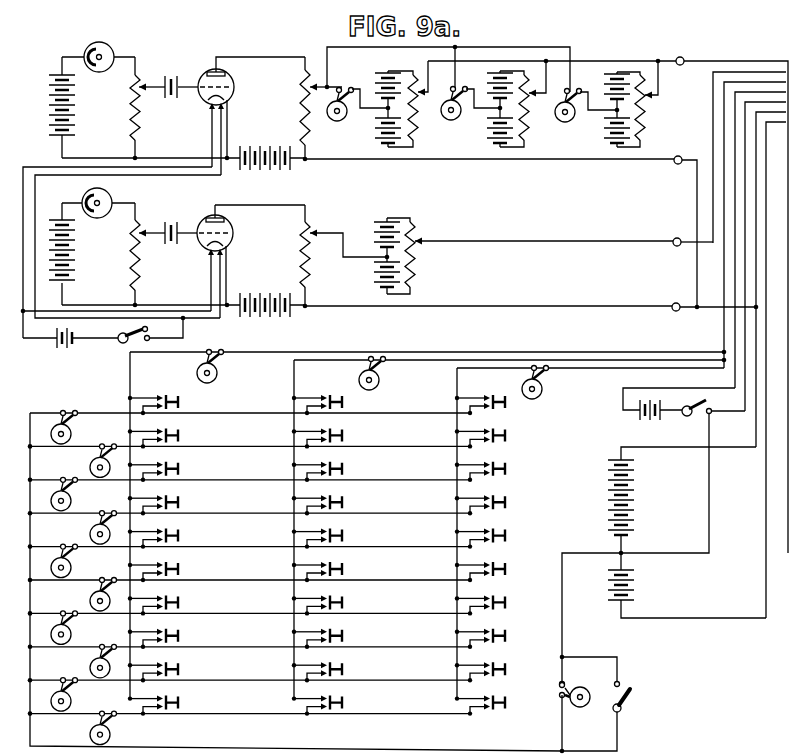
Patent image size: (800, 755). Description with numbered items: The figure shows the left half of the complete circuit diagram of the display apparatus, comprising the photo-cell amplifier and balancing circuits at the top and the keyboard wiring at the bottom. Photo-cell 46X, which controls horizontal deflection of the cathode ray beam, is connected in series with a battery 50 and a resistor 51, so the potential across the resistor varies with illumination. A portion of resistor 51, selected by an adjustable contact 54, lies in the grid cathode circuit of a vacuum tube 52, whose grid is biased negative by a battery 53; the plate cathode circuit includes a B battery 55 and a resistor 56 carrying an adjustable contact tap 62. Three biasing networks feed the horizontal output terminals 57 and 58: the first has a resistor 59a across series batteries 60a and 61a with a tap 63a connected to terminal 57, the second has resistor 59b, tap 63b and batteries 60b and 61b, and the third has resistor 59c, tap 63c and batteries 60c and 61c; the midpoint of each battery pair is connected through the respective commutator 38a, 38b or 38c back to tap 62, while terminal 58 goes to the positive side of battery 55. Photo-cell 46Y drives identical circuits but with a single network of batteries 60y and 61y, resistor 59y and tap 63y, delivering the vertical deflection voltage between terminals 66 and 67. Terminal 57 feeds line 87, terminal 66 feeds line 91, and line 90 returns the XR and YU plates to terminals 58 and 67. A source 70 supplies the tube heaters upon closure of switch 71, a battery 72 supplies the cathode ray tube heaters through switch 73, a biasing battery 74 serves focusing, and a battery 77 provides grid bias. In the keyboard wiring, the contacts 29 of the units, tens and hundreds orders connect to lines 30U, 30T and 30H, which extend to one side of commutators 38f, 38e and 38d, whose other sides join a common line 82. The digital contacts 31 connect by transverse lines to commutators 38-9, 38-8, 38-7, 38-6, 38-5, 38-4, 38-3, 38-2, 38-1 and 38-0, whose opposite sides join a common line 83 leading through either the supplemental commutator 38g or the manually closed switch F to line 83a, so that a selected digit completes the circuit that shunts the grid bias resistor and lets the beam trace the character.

The photo-cell 46X is at (112, 50).
The photo-cell 46Y is at (111, 197).
The battery 50 is at (76, 100).
The resistor 51 is at (138, 78).
The vacuum tube 52 is at (233, 80).
The battery 53 is at (175, 72).
The contact 54 is at (149, 92).
The B battery 55 is at (265, 147).
The resistor 56 is at (300, 105).
The terminal 57 is at (681, 57).
The terminal 58 is at (676, 166).
The resistor 59a is at (422, 64).
The resistor 59b is at (528, 68).
The resistor 59c is at (647, 82).
The resistor 59y is at (415, 222).
The battery 60a is at (374, 86).
The battery 60b is at (493, 88).
The battery 60c is at (607, 90).
The battery 60y is at (375, 237).
The battery 61a is at (375, 122).
The battery 61b is at (493, 125).
The battery 61c is at (608, 128).
The battery 61y is at (374, 270).
The contact tap 62 is at (326, 62).
The contact tap 63a is at (424, 98).
The contact tap 63b is at (540, 100).
The contact tap 63c is at (648, 95).
The contact tap 63y is at (424, 243).
The terminal 66 is at (674, 240).
The terminal 67 is at (673, 305).
The source 70 is at (66, 350).
The switch 71 is at (125, 347).
The battery 72 is at (644, 420).
The switch 73 is at (700, 413).
The biasing battery 74 is at (635, 490).
The battery 77 is at (632, 590).
The common line 82 is at (724, 336).
The common line 83 is at (30, 620).
The line 83a is at (733, 414).
The line 87 is at (745, 60).
The line 90 is at (757, 271).
The line 91 is at (713, 137).
The commutator 38a is at (333, 122).
The commutator 38b is at (449, 121).
The commutator 38c is at (563, 122).
The commutator 38d is at (215, 380).
The commutator 38e is at (377, 387).
The commutator 38f is at (540, 396).
The supplemental commutator 38g is at (583, 707).
The commutator 38-0 is at (90, 733).
The commutator 38-1 is at (71, 700).
The commutator 38-2 is at (90, 666).
The commutator 38-3 is at (71, 633).
The commutator 38-4 is at (90, 599).
The commutator 38-5 is at (71, 566).
The commutator 38-6 is at (90, 532).
The commutator 38-7 is at (71, 499).
The commutator 38-8 is at (90, 465).
The commutator 38-9 is at (71, 432).
The contacts 29 is at (162, 397).
The contacts 31 is at (145, 409).
The line 30H is at (150, 552).
The line 30T is at (293, 557).
The line 30U is at (453, 556).
The switch F is at (633, 697).